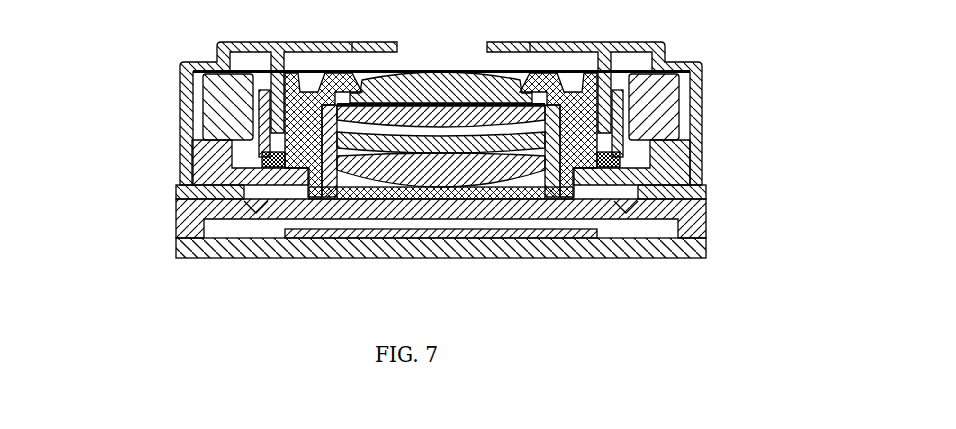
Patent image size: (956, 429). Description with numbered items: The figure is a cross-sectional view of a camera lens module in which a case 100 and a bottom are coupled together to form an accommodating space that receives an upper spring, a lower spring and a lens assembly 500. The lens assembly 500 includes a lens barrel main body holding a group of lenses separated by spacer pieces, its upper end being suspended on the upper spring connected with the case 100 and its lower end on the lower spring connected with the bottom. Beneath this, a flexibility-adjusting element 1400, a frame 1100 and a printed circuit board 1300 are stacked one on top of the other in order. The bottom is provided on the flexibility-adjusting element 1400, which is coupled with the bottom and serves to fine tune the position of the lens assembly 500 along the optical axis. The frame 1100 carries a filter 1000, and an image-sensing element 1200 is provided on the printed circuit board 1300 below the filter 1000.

The case 100 is at (442, 119).
The lens assembly 500 is at (607, 80).
The filter 1000 is at (445, 255).
The frame 1100 is at (181, 210).
The image-sensing element 1200 is at (285, 230).
The printed circuit board 1300 is at (678, 257).
The flexibility-adjusting element 1400 is at (181, 197).